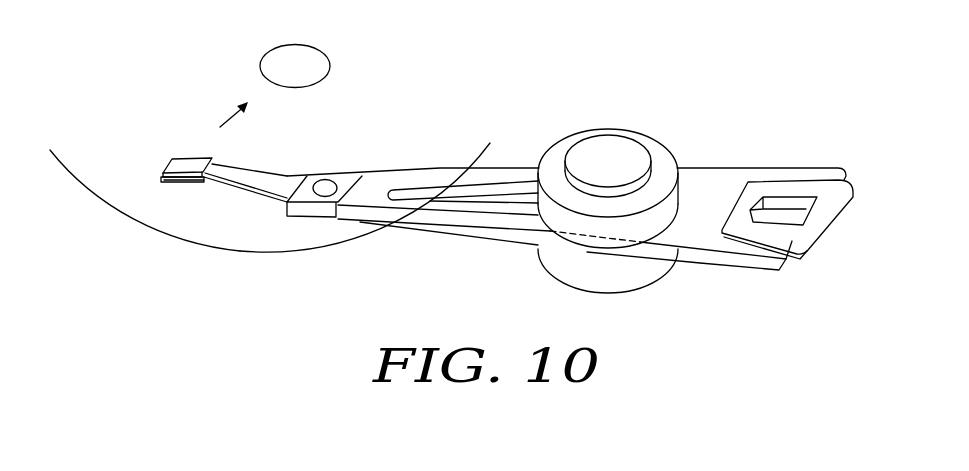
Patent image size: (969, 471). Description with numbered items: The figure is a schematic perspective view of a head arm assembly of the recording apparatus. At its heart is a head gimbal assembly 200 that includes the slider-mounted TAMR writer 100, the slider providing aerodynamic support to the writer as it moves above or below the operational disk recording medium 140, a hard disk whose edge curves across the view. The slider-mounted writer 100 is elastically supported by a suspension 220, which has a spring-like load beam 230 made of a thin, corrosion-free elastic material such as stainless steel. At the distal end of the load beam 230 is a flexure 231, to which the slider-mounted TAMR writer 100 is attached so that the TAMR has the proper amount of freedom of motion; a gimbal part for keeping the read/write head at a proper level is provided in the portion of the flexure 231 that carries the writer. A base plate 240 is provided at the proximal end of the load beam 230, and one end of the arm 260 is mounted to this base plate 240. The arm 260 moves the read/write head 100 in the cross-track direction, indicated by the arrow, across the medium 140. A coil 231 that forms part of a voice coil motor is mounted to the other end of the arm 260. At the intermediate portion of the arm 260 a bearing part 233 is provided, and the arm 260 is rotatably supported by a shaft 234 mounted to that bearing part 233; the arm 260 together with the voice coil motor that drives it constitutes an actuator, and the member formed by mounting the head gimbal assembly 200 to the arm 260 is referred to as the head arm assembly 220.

The slider-mounted TAMR writer 100 is at (181, 158).
The disk recording medium 140 is at (158, 233).
The head gimbal assembly 200 is at (270, 230).
The suspension 220 is at (468, 124).
The load beam 230 is at (290, 178).
The flexure 231 is at (168, 174).
The bearing part 233 is at (560, 150).
The shaft 234 is at (609, 150).
The base plate 240 is at (353, 174).
The arm 260 is at (427, 224).